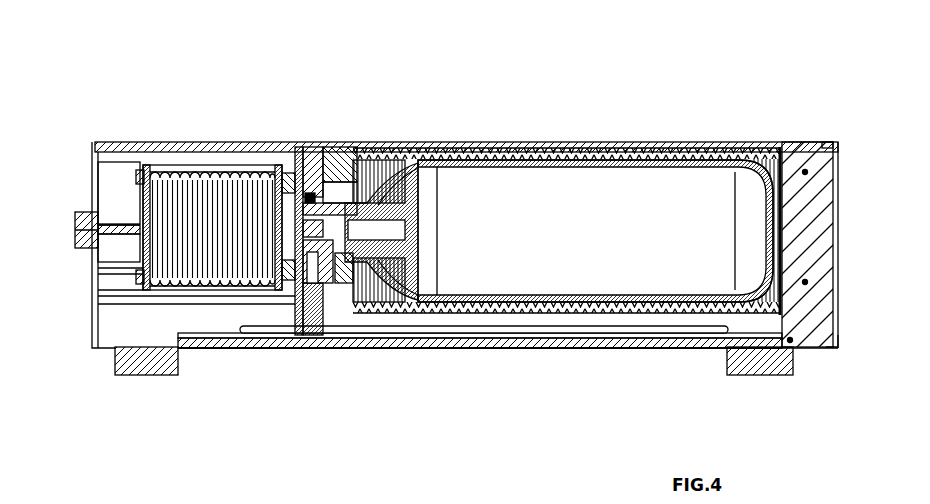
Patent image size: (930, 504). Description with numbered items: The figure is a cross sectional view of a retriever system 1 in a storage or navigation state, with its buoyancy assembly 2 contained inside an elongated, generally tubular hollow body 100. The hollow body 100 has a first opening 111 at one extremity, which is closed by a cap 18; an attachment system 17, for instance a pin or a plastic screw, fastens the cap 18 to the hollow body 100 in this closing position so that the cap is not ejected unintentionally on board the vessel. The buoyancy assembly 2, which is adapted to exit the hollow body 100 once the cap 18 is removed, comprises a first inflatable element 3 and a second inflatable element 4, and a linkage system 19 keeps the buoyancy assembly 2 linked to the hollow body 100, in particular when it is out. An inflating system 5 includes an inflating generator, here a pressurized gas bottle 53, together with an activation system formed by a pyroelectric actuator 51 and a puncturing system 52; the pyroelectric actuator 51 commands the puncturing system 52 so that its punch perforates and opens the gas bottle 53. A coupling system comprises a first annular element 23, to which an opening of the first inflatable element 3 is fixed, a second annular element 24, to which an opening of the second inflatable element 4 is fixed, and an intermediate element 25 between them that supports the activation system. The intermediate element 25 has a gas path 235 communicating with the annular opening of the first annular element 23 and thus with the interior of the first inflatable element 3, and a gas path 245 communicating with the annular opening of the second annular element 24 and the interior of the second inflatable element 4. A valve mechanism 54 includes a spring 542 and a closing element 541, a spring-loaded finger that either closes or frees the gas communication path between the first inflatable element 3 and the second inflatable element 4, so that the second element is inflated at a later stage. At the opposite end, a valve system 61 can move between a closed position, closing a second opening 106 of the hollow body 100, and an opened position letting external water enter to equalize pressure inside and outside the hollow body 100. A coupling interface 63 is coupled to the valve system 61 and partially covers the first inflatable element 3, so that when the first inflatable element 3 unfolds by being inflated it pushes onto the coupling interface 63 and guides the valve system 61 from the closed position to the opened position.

The retriever system 1 is at (772, 102).
The buoyancy assembly 2 is at (266, 162).
The first inflatable element 3 is at (235, 142).
The second inflatable element 4 is at (415, 142).
The inflating system 5 is at (503, 347).
The attachment system 17 is at (808, 142).
The cap 18 is at (825, 230).
The linkage system 19 is at (253, 335).
The first annular element 23 is at (298, 147).
The second annular element 24 is at (345, 142).
The intermediate element 25 is at (307, 338).
The pyroelectric actuator 51 is at (340, 340).
The puncturing system 52 is at (372, 250).
The pressurized gas bottle 53 is at (608, 243).
The valve mechanism 54 is at (303, 196).
The valve system 61 is at (74, 238).
The coupling interface 63 is at (153, 142).
The hollow body 100 is at (180, 378).
The second opening 106 is at (75, 213).
The first opening 111 is at (827, 350).
The gas path 235 is at (292, 208).
The gas path 245 is at (420, 165).
The closing element 541 is at (318, 147).
The spring 542 is at (370, 228).